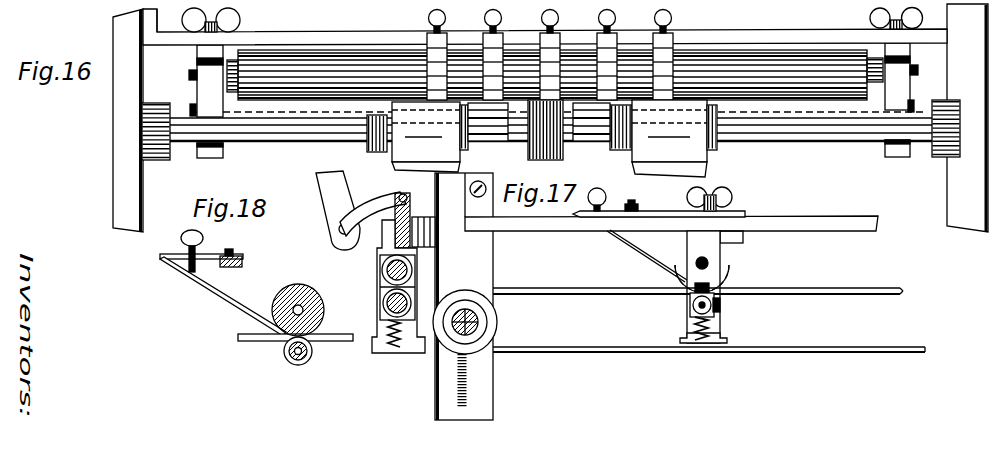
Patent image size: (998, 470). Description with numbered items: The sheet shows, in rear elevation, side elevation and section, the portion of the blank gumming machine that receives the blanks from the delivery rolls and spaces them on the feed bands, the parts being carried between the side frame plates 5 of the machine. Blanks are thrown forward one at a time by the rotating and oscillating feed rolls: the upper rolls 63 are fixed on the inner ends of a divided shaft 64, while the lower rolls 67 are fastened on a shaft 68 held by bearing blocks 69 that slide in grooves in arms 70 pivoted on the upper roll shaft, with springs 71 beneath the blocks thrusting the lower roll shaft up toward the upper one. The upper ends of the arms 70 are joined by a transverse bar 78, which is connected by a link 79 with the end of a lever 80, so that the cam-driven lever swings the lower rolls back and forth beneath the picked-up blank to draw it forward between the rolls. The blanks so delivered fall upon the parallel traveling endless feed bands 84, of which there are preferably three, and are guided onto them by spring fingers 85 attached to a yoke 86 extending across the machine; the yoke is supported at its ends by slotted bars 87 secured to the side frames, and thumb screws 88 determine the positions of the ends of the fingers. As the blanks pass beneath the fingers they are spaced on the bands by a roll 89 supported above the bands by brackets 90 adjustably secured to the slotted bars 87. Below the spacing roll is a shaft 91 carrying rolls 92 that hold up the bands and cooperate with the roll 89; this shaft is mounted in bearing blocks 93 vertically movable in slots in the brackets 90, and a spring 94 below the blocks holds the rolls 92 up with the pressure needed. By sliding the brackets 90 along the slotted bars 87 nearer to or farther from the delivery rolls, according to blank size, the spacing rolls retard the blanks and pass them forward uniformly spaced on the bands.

In FIG. 16, the frame plate 5 is at (137, 149).
In FIG. 17, the frame plate 5 is at (481, 377).
In FIG. 18, the upper rolls 63 is at (410, 263).
In FIG. 18, the divided shaft 64 is at (405, 270).
In FIG. 18, the lower rolls 67 is at (380, 306).
In FIG. 17, the shaft 68 is at (410, 297).
In FIG. 18, the bearing blocks 69 is at (380, 287).
In FIG. 18, the arms 70 is at (380, 262).
In FIG. 18, the springs 71 is at (395, 351).
In FIG. 18, the bar 78 is at (411, 216).
In FIG. 18, the link 79 is at (389, 201).
In FIG. 18, the lever 80 is at (329, 222).
In FIG. 16, the endless feed bands 84 is at (547, 159).
In FIG. 17, the endless feed bands 84 is at (622, 353).
In FIG. 18, the endless feed bands 84 is at (330, 346).
In FIG. 16, the spring fingers 85 is at (427, 42).
In FIG. 17, the spring fingers 85 is at (640, 257).
In FIG. 18, the spring fingers 85 is at (205, 288).
In FIG. 16, the yoke 86 is at (757, 31).
In FIG. 17, the yoke 86 is at (740, 210).
In FIG. 18, the yoke 86 is at (243, 261).
In FIG. 16, the slotted bars 87 is at (234, 36).
In FIG. 17, the slotted bars 87 is at (832, 226).
In FIG. 16, the thumb screws 88 is at (428, 24).
In FIG. 17, the thumb screws 88 is at (605, 204).
In FIG. 18, the thumb screws 88 is at (183, 252).
In FIG. 16, the roll 89 is at (799, 57).
In FIG. 17, the roll 89 is at (730, 264).
In FIG. 18, the roll 89 is at (272, 312).
In FIG. 16, the brackets 90 is at (197, 61).
In FIG. 17, the brackets 90 is at (693, 276).
In FIG. 16, the shaft 91 is at (305, 123).
In FIG. 17, the shaft 91 is at (720, 300).
In FIG. 18, the shaft 91 is at (291, 358).
In FIG. 16, the rolls 92 is at (490, 141).
In FIG. 17, the rolls 92 is at (690, 305).
In FIG. 18, the rolls 92 is at (283, 352).
In FIG. 16, the bearing blocks 93 is at (193, 106).
In FIG. 17, the bearing blocks 93 is at (720, 316).
In FIG. 17, the spring 94 is at (690, 331).